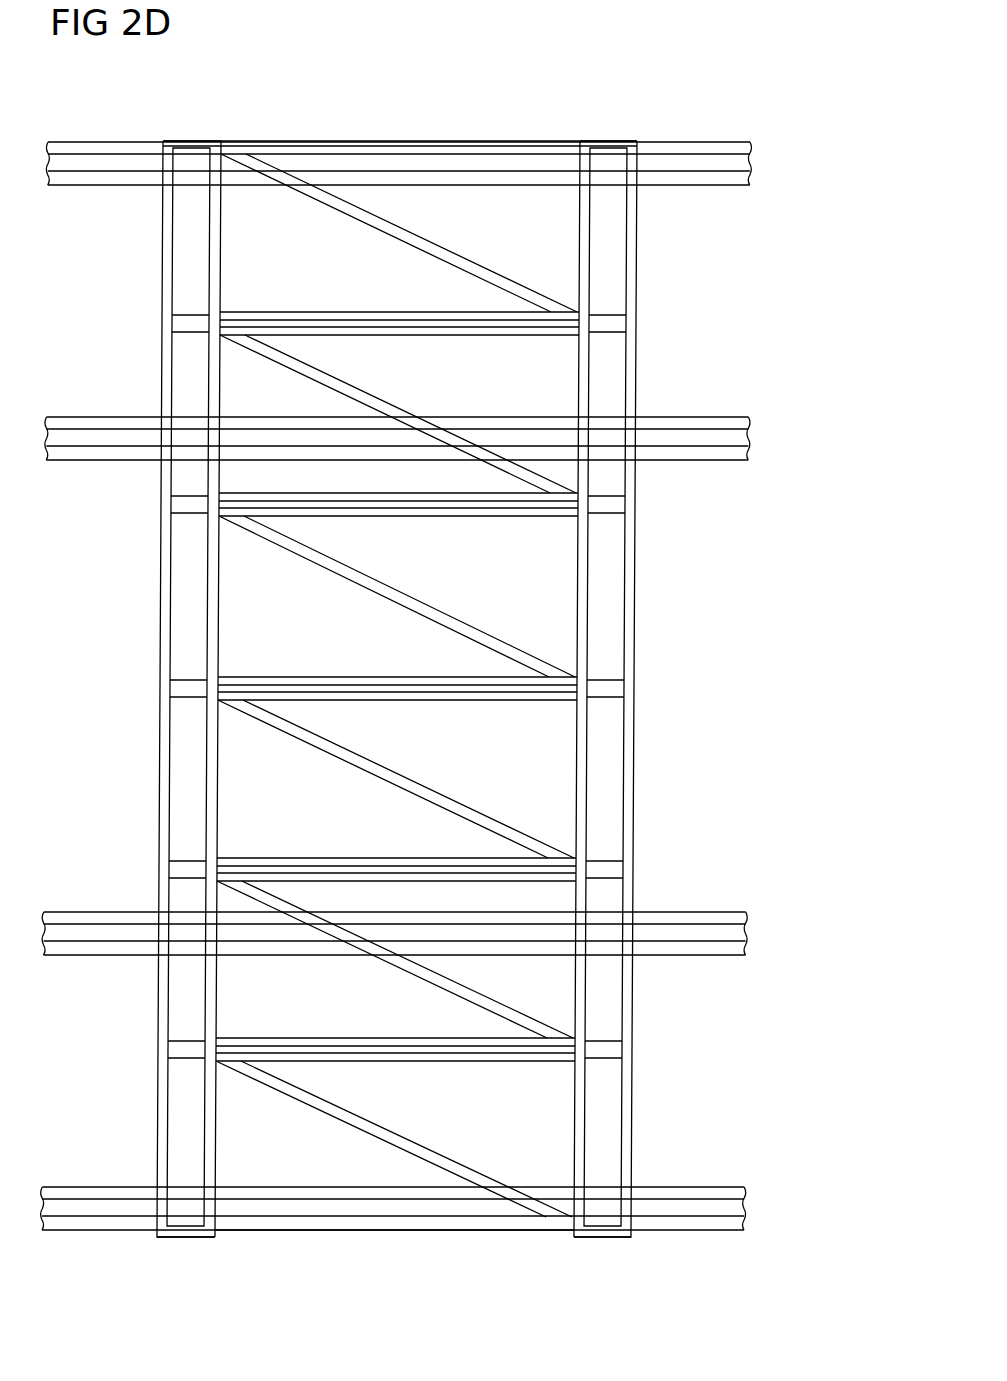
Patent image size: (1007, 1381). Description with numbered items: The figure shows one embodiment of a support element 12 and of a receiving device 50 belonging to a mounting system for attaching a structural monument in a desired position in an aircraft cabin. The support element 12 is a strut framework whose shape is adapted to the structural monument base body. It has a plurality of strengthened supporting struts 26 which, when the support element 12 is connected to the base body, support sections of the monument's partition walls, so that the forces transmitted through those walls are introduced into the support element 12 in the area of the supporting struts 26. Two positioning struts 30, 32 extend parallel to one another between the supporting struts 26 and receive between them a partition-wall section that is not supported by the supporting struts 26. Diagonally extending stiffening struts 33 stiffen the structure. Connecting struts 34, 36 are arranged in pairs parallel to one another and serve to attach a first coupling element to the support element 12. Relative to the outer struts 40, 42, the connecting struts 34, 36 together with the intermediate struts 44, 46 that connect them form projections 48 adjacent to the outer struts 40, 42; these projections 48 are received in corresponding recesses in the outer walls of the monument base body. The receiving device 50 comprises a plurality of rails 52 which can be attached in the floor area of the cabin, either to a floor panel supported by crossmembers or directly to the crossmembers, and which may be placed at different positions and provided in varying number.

The support element 12 is at (664, 662).
The supporting struts 26 is at (196, 334).
The positioning strut 30 is at (513, 336).
The positioning strut 32 is at (313, 312).
The stiffening struts 33 is at (452, 262).
The connecting strut 34 is at (163, 762).
The connecting strut 36 is at (221, 607).
The outer strut 40 is at (410, 140).
The outer strut 42 is at (383, 1238).
The intermediate strut 44 is at (612, 146).
The intermediate strut 46 is at (192, 146).
The projections 48 is at (160, 128).
The receiving device 50 is at (731, 382).
The rails 52 is at (733, 168).